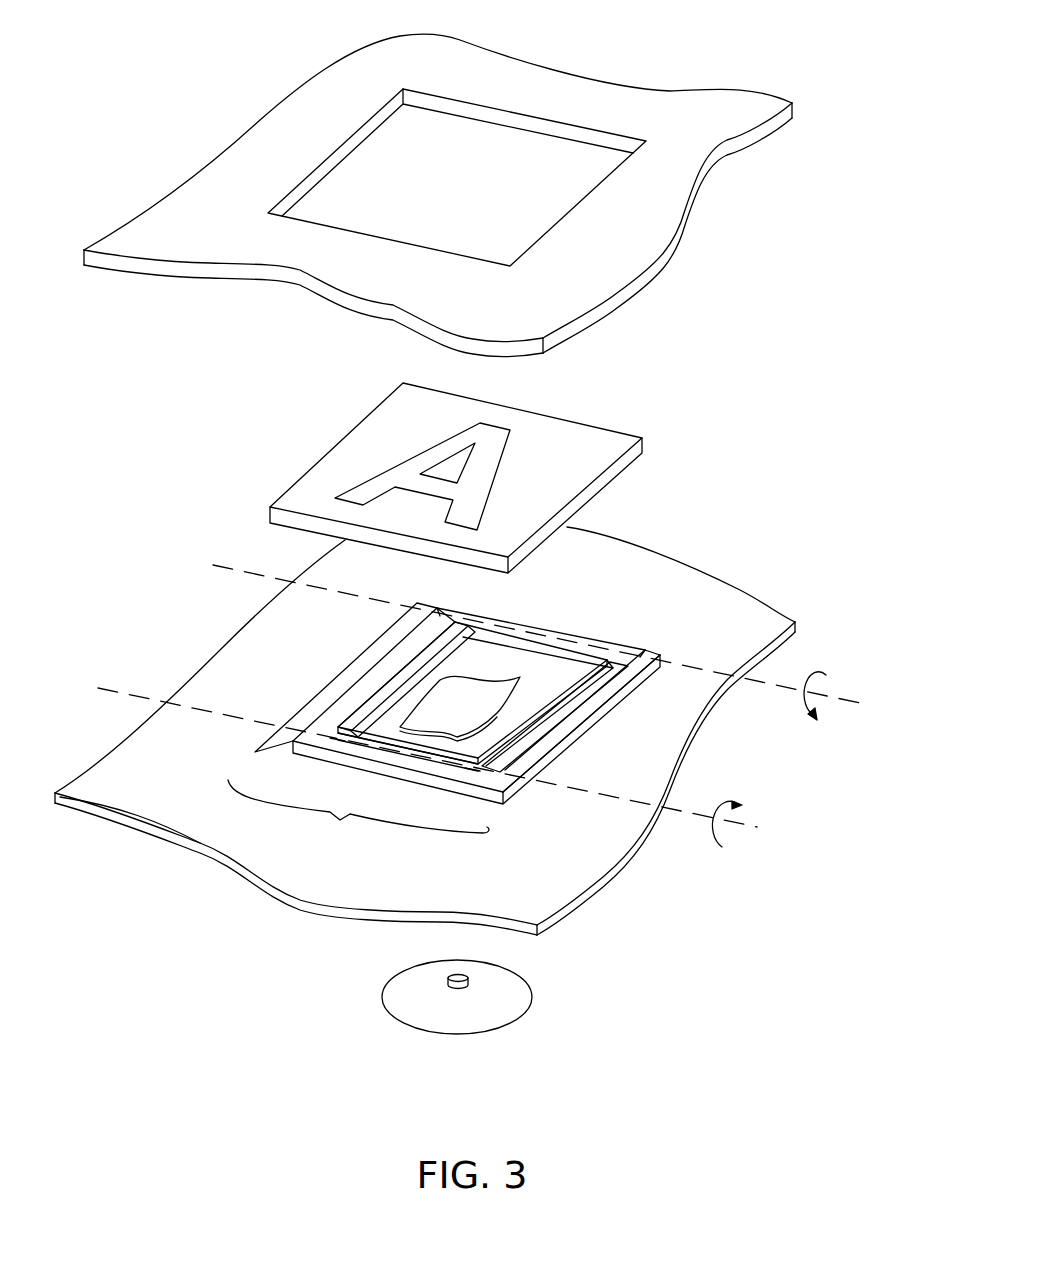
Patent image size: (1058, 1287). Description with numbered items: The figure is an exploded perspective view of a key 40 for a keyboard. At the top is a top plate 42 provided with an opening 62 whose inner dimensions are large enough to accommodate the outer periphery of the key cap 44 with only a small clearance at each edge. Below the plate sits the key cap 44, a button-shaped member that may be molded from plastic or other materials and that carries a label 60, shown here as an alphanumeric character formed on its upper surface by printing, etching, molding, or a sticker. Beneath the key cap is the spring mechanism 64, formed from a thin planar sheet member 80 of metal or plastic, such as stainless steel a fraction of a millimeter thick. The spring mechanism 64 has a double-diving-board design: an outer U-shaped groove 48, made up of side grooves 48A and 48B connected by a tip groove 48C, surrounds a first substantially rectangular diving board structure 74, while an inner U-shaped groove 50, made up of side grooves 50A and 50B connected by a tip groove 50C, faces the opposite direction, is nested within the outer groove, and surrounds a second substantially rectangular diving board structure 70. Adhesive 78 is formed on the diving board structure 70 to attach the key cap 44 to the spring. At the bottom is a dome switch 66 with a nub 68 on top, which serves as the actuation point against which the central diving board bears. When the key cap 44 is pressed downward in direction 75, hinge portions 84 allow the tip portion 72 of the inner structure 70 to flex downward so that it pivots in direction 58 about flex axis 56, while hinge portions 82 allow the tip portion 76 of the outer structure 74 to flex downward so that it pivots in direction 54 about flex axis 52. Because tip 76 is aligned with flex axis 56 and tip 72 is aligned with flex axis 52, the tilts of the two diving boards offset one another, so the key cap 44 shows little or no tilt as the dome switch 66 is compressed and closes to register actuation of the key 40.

The key 40 is at (817, 467).
The top plate 42 is at (438, 188).
The key cap 44 is at (458, 478).
The outer U-shaped groove 48 is at (453, 708).
The side groove 48A is at (343, 690).
The side groove 48B is at (572, 740).
The tip groove 48C is at (483, 800).
The inner U-shaped groove 50 is at (587, 642).
The side groove 50A is at (397, 683).
The side groove 50B is at (567, 702).
The tip groove 50C is at (517, 662).
The flex axis 52 is at (250, 575).
The direction 54 is at (816, 684).
The flex axis 56 is at (126, 698).
The direction 58 is at (728, 803).
The label 60 is at (403, 470).
The opening 62 is at (487, 147).
The spring mechanism 64 is at (847, 620).
The dome switch 66 is at (517, 1020).
The nub 68 is at (457, 988).
The second diving board structure 70 is at (440, 677).
The tip portion 72 is at (502, 642).
The first diving board structure 74 is at (230, 762).
The direction 75 is at (735, 483).
The tip portion 76 is at (413, 743).
The adhesive 78 is at (463, 667).
The planar sheet member 80 is at (128, 802).
The hinge portions 82 is at (435, 622).
The hinge portions 84 is at (337, 733).